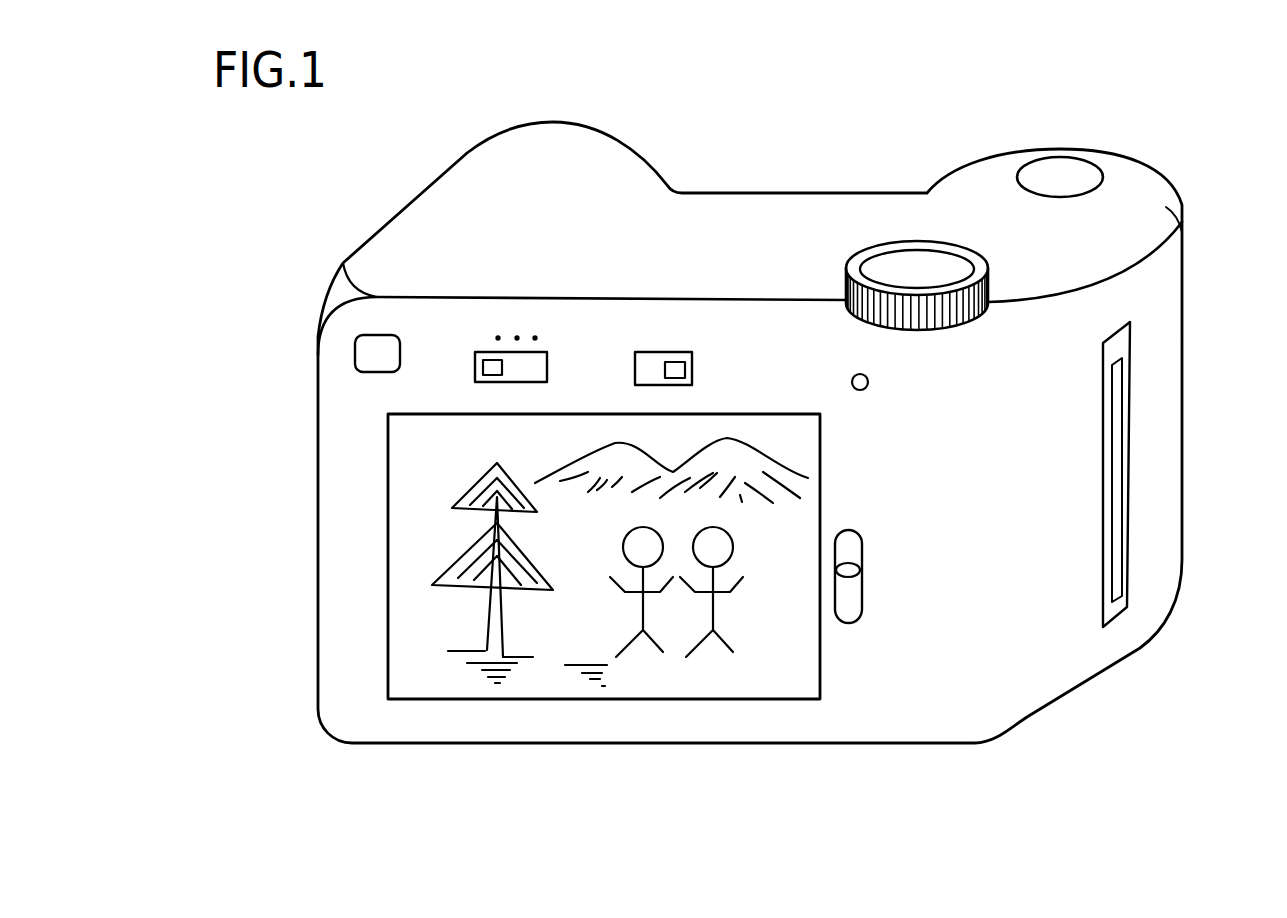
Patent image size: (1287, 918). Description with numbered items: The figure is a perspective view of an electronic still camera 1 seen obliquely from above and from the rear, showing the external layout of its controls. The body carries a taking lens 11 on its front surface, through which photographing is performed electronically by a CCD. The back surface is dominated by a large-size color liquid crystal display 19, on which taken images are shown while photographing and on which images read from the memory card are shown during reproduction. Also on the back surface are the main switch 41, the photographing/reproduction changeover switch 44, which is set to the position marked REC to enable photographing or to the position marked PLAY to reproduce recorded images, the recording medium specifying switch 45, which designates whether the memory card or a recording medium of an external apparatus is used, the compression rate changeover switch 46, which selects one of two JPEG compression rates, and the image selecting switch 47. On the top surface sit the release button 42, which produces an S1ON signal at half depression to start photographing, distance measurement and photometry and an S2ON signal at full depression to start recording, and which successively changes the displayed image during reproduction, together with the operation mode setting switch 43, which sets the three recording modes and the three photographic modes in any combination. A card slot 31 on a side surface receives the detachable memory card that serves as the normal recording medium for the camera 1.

The electronic still camera 1 is at (697, 764).
The taking lens 11 is at (612, 128).
The color liquid crystal display 19 is at (528, 685).
The card slot 31 is at (1122, 455).
The main switch 41 is at (356, 353).
The release button 42 is at (1085, 158).
The operation mode setting switch 43 is at (917, 241).
The photographing/reproduction changeover switch 44 is at (863, 613).
The recording medium specifying switch 45 is at (492, 352).
The compression rate changeover switch 46 is at (678, 357).
The image selecting switch 47 is at (857, 374).